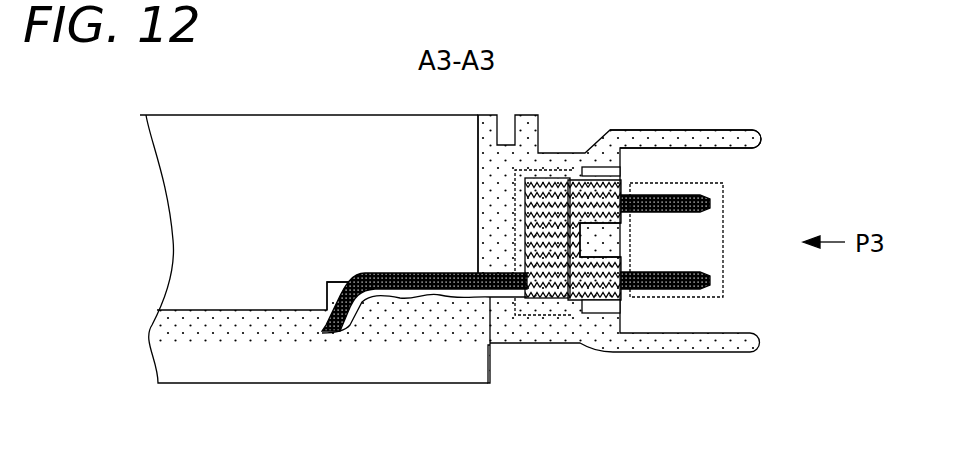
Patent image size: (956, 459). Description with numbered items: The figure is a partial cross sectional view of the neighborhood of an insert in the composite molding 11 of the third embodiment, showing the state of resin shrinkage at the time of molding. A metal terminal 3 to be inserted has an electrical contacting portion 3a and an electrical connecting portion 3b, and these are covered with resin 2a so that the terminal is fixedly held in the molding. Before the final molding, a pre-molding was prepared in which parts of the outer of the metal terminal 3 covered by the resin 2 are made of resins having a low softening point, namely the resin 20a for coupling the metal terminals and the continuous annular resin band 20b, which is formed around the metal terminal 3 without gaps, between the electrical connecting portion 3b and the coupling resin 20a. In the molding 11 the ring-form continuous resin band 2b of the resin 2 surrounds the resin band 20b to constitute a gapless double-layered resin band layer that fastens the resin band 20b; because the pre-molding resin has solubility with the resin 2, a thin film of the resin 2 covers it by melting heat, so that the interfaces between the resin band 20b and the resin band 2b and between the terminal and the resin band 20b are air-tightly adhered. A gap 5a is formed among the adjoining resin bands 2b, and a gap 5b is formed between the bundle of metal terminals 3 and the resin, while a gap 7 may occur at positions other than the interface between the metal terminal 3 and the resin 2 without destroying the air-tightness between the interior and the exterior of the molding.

The composite molding 11 is at (185, 170).
The resin 2 is at (492, 150).
The resin 2a is at (542, 158).
The ring-form continuous resin band 2b is at (602, 176).
The metal terminal 3 is at (428, 273).
The electrical contacting portion 3a is at (687, 290).
The electrical connecting portion 3b is at (378, 272).
The gap 5a is at (605, 242).
The gap 5b is at (605, 168).
The gap 7 is at (525, 237).
The resin for coupling the metal terminals 20a is at (525, 205).
The continuous annular resin band 20b is at (568, 188).